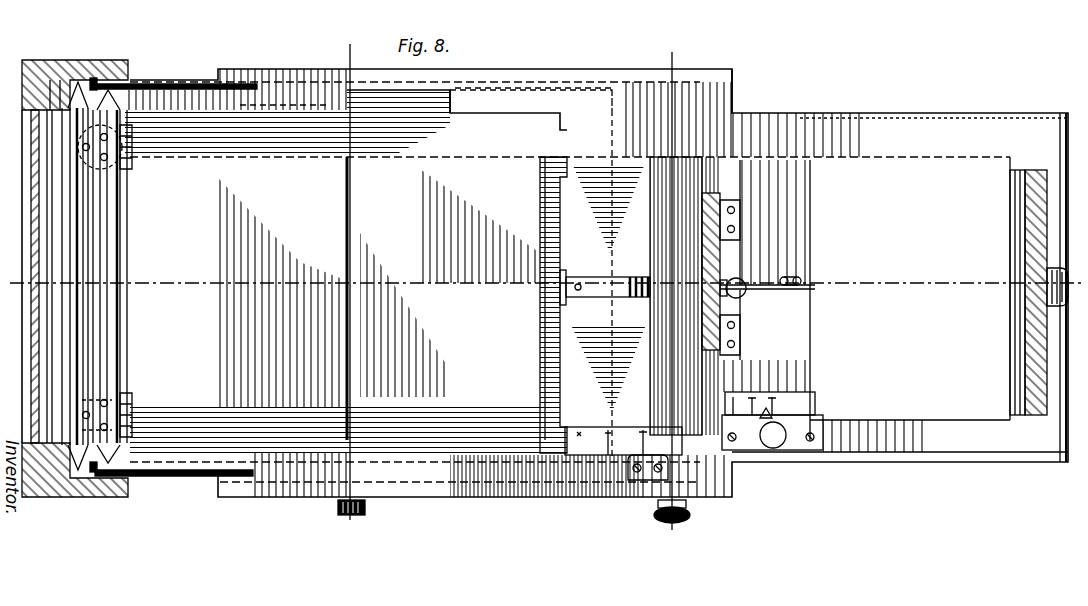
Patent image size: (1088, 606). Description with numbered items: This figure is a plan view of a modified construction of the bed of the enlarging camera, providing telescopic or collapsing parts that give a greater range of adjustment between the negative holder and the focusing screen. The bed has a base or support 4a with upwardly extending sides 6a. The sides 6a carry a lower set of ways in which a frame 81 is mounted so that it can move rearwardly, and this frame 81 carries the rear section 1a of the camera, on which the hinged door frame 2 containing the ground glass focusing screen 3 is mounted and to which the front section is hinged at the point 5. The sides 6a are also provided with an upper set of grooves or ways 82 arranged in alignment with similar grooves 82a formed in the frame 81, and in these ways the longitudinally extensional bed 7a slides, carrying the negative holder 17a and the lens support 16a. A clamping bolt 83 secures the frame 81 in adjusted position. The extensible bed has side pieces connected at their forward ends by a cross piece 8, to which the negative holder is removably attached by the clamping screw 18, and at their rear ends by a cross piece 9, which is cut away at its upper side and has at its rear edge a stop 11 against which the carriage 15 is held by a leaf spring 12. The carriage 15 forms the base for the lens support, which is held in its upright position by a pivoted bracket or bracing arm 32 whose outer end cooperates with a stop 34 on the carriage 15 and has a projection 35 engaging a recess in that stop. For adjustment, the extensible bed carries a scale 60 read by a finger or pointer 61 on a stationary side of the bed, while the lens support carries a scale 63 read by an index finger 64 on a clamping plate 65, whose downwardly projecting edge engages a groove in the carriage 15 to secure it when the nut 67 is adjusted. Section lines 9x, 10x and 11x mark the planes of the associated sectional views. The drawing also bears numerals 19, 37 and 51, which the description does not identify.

The rear section of the camera 1a is at (66, 63).
The hinged door frame 2 is at (28, 90).
The ground glass focusing screen 3 is at (34, 132).
The base or support 4a is at (425, 315).
The hinge point 5 is at (131, 156).
The upwardly extending sides 6a is at (533, 77).
The longitudinally extensional bed 7a is at (900, 260).
The cross piece 8 is at (1047, 287).
The cross piece 9 is at (608, 287).
The section line 9x is at (542, 278).
The section line 10x is at (246, 284).
The stop 11 is at (560, 291).
The section line 11x is at (676, 290).
The leaf spring 12 is at (601, 296).
The carriage 15 is at (750, 217).
The lens support 16a is at (718, 251).
The negative holder 17a is at (1032, 224).
The clamping screw 18 is at (1056, 308).
The tube assembly 19 is at (108, 338).
The pivoted bracket or bracing arm 32 is at (746, 294).
The stop 34 is at (800, 278).
The projection 35 is at (805, 284).
The compartment 37 is at (808, 304).
The block 51 is at (765, 374).
The scale 60 is at (618, 430).
The finger or pointer 61 is at (640, 476).
The scale 63 is at (790, 396).
The index finger 64 is at (785, 413).
The clamping plate 65 is at (797, 447).
The nut 67 is at (773, 435).
The frame 81 is at (481, 287).
The upper set of grooves or ways 82 is at (545, 143).
The grooves 82a is at (287, 124).
The clamping bolt 83 is at (353, 368).